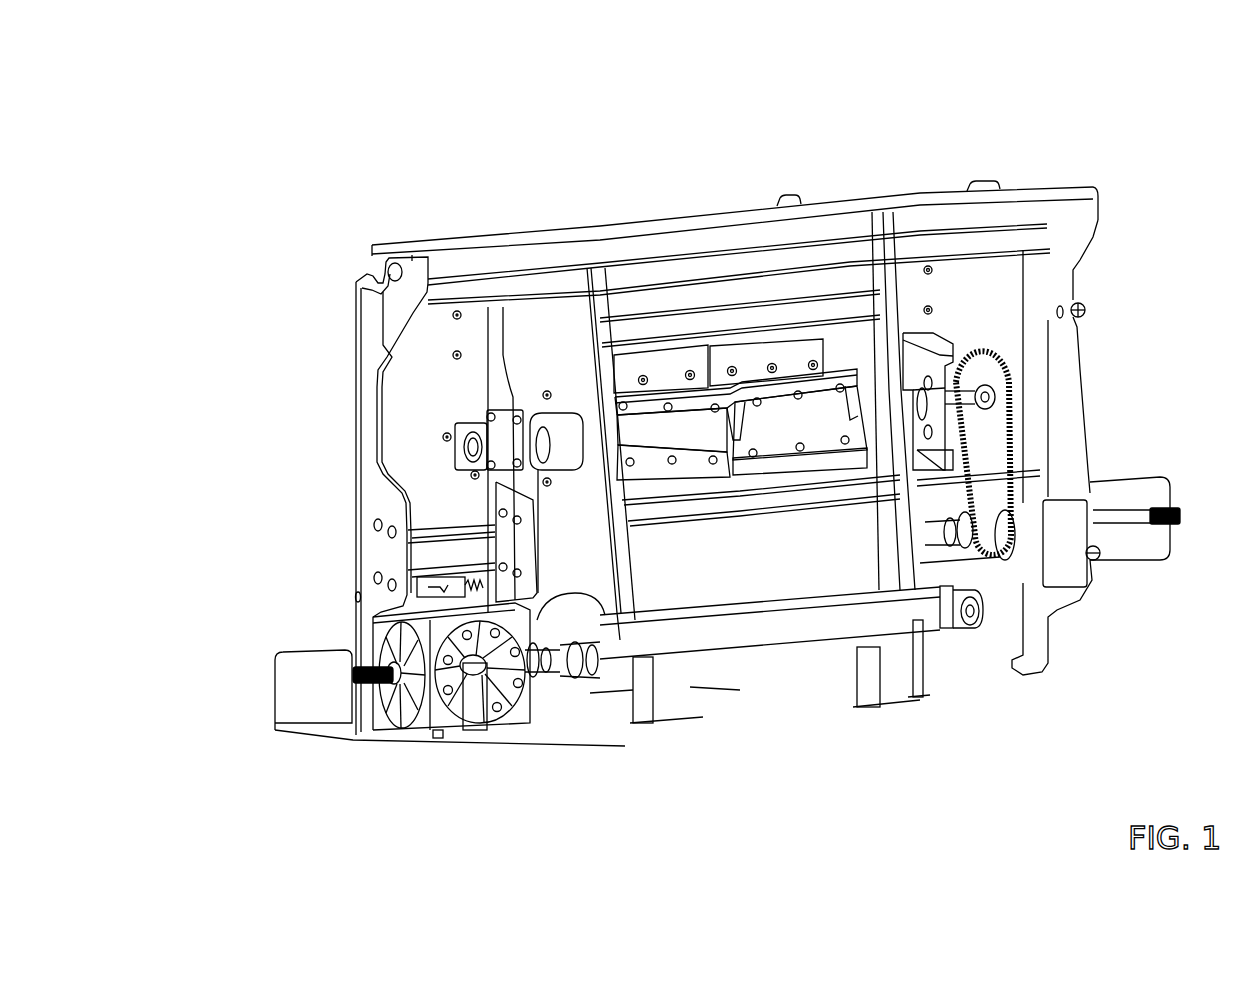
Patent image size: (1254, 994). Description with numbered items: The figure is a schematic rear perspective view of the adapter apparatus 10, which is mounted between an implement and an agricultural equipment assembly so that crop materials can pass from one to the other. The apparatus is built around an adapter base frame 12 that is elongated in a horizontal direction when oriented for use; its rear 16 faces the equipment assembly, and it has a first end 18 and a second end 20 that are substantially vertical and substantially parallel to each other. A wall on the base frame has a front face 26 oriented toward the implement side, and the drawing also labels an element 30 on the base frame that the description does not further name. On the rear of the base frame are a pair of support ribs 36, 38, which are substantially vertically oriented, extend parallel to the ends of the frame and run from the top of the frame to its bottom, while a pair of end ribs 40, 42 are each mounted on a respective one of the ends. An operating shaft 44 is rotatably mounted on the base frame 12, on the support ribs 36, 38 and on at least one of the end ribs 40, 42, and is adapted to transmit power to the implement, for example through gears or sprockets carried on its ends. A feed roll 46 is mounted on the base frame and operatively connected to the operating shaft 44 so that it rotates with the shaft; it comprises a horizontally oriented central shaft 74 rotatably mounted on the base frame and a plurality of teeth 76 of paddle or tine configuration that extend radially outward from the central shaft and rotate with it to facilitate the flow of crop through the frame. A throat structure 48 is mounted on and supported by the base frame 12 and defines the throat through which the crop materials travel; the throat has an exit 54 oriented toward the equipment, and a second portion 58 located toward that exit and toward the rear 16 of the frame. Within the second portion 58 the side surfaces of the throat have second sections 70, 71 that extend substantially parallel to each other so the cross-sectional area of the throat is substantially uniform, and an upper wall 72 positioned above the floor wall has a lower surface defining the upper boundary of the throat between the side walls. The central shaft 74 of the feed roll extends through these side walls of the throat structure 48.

The adapter apparatus 10 is at (695, 444).
The adapter base frame 12 is at (1033, 212).
The rear 16 is at (422, 417).
The first end 18 is at (1080, 294).
The second end 20 is at (368, 343).
The front face 26 is at (432, 478).
The bearing assembly 30 is at (432, 385).
The support rib 36 is at (893, 308).
The support rib 38 is at (488, 347).
The end rib 40 is at (1088, 250).
The end rib 42 is at (368, 305).
The operating shaft 44 is at (497, 670).
The feed roll 46 is at (740, 260).
The throat structure 48 is at (648, 275).
The exit 54 is at (730, 517).
The second portion 58 is at (887, 452).
The second section 70 is at (739, 231).
The second section 71 is at (623, 573).
The upper wall 72 is at (718, 237).
The central shaft 74 is at (857, 400).
The teeth 76 is at (823, 460).